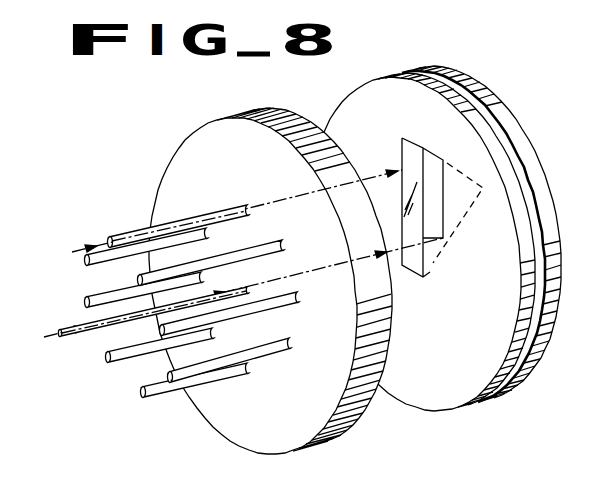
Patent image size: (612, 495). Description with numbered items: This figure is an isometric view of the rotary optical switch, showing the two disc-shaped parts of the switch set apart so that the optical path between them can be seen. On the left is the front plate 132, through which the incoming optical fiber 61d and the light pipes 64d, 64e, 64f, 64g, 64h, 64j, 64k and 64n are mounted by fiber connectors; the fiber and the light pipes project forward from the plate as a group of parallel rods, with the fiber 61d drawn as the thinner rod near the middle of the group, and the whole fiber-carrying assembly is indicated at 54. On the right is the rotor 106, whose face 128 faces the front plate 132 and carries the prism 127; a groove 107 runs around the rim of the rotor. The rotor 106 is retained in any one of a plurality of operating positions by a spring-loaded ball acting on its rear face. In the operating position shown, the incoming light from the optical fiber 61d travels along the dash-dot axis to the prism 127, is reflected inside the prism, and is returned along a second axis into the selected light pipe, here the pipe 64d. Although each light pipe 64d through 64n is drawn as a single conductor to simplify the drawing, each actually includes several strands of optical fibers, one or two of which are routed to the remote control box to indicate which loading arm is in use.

The fiber optic disc assembly 54 is at (223, 435).
The front plate 132 is at (210, 132).
The face of the rotor 128 is at (448, 406).
The rotor 106 is at (504, 117).
The rim groove 107 is at (502, 145).
The prism 127 is at (402, 148).
The optical fiber 61d is at (70, 340).
The light pipe 64d is at (190, 217).
The light pipe 64e is at (85, 257).
The light pipe 64f is at (102, 297).
The light pipe 64g is at (115, 363).
The light pipe 64h is at (158, 397).
The light pipe 64j is at (285, 350).
The light pipe 64k is at (275, 310).
The light pipe 64n is at (267, 243).